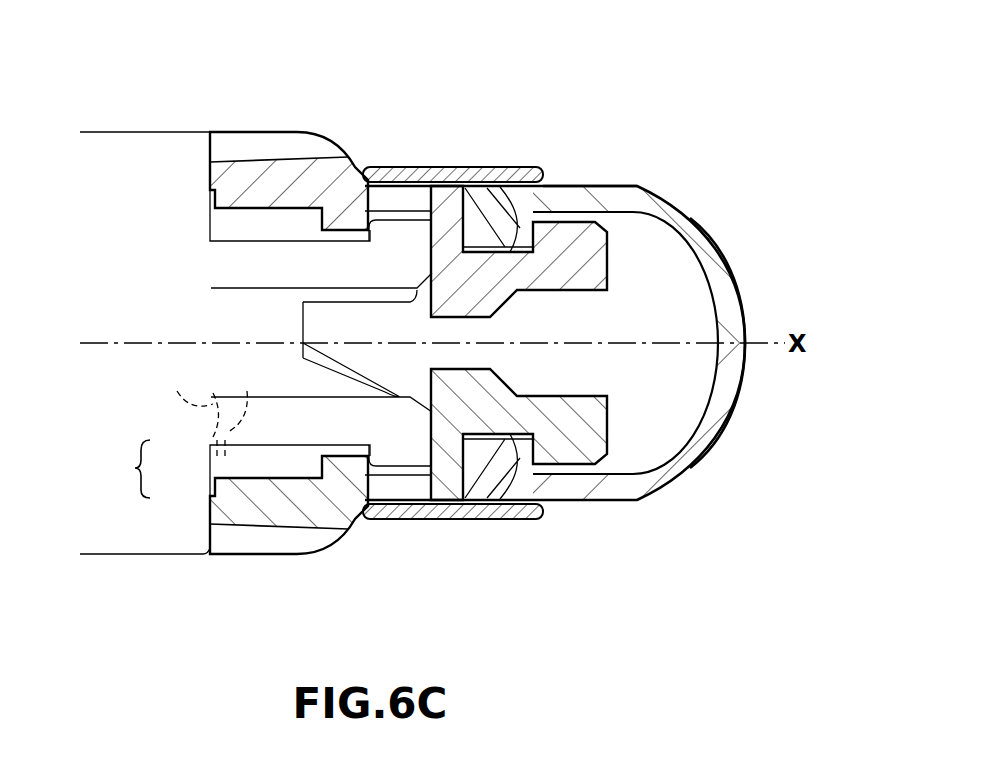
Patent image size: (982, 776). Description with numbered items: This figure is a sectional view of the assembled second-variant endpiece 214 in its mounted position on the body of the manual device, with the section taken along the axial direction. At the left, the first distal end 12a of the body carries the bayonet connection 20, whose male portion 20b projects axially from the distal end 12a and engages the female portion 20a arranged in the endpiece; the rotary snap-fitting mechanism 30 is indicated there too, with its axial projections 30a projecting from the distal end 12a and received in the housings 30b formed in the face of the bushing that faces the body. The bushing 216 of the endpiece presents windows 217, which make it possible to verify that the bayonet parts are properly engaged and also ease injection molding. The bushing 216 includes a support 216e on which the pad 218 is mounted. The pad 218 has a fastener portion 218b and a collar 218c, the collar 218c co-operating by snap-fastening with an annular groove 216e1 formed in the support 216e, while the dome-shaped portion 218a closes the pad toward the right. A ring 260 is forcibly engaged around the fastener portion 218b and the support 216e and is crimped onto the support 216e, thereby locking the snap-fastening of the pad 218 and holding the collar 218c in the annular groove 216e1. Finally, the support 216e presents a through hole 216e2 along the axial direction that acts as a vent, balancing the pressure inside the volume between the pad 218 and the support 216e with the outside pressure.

The bushing 216 is at (256, 132).
The windows 217 is at (400, 197).
The ring 260 is at (428, 168).
The annular groove 216e1 is at (493, 208).
The fastener portion 218b is at (588, 185).
The endpiece 214 is at (657, 159).
The pad 218 is at (690, 217).
The pad portion 218a is at (729, 273).
The support 216e is at (589, 409).
The through hole 216e2 is at (470, 353).
The collar 218c is at (508, 520).
The first distal end 12a is at (203, 545).
The rotary snap-fitting mechanism 30 is at (187, 413).
The axial projections 30a is at (180, 386).
The housings 30b is at (246, 399).
The bayonet connection 20 is at (135, 468).
The female portion 20a is at (264, 465).
The male portion 20b is at (263, 447).